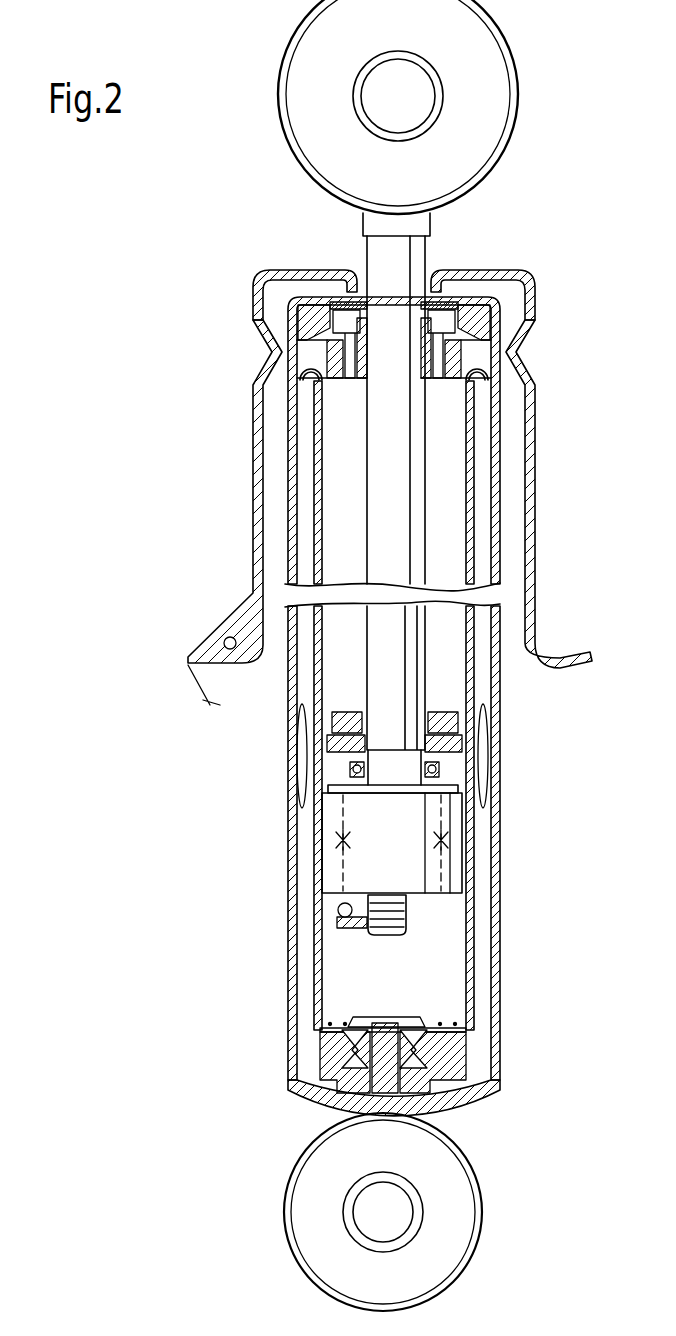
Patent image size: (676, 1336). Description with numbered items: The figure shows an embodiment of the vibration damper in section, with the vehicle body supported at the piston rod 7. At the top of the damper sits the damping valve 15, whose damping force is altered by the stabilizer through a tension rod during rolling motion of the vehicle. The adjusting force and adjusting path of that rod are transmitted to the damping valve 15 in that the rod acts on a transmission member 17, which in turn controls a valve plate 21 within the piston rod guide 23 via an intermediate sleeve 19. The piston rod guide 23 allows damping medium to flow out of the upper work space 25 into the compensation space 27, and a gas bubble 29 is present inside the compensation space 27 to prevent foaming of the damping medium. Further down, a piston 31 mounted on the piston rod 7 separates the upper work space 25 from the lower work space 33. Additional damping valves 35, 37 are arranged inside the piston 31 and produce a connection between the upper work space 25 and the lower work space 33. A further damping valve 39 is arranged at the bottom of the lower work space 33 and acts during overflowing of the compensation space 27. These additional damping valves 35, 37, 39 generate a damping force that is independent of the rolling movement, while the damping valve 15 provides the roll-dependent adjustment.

The piston rod 7 is at (412, 693).
The damping valve 15 is at (335, 262).
The transmission member 17 is at (252, 428).
The intermediate sleeve 19 is at (307, 293).
The valve plate 21 is at (323, 339).
The piston rod guide 23 is at (440, 393).
The upper work space 25 is at (453, 497).
The compensation space 27 is at (302, 908).
The gas bubble 29 is at (482, 762).
The piston 31 is at (445, 822).
The lower work space 33 is at (452, 935).
The additional damping valve 35 is at (335, 782).
The additional damping valve 37 is at (342, 916).
The further damping valve 39 is at (470, 1062).